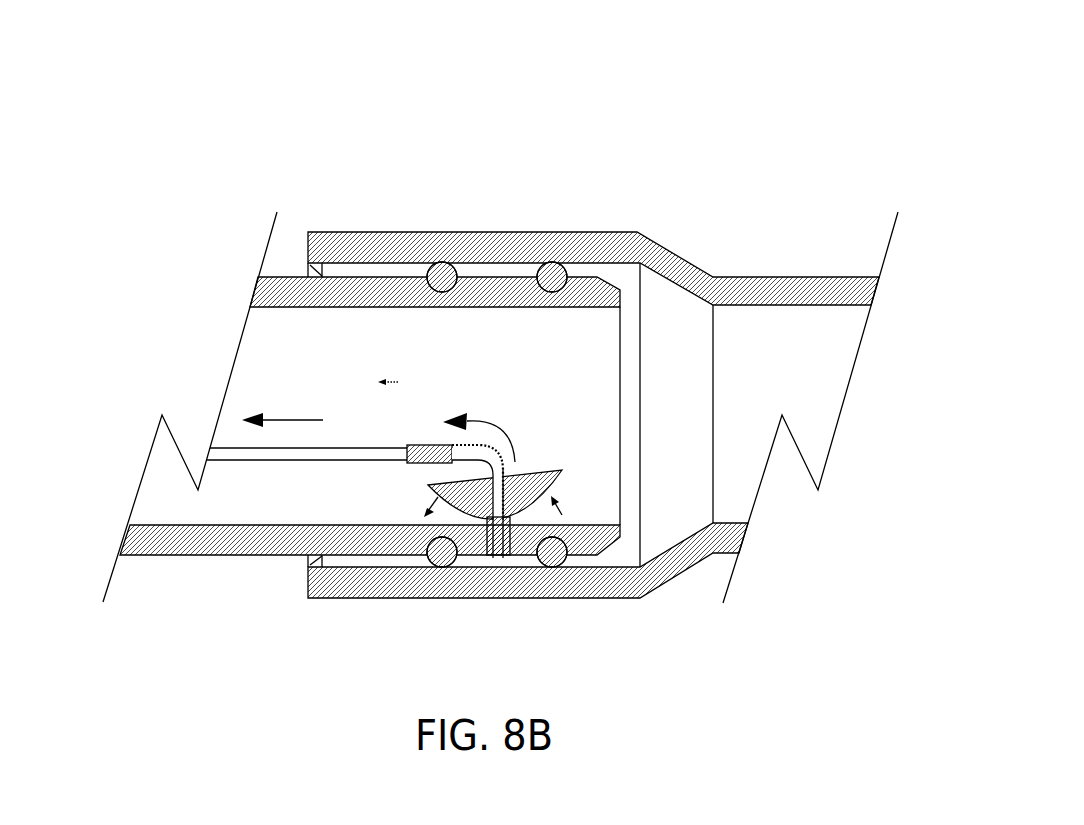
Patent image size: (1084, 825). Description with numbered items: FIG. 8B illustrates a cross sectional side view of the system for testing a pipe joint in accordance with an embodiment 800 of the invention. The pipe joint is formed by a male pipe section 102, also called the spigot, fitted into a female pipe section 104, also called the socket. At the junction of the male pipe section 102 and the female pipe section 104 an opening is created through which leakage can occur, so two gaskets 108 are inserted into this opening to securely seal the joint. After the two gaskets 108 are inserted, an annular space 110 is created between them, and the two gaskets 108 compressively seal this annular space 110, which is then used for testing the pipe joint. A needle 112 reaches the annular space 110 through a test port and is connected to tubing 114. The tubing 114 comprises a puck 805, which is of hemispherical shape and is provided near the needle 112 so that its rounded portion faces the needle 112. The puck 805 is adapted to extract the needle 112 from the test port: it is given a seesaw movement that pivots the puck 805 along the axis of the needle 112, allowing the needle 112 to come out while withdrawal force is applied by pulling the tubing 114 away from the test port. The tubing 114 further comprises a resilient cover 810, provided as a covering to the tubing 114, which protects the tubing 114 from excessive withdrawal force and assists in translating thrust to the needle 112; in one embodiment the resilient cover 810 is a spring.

The fluid coupling system 800 is at (328, 100).
The inner tube 102 is at (279, 280).
The outer tube 104 is at (487, 233).
The o-ring seals 108 is at (436, 268).
The port tube 110 is at (505, 560).
The seal block 112 is at (493, 562).
The rod 114 is at (358, 448).
The funnel shield 805 is at (562, 470).
The coupler with bent tube 810 is at (435, 445).